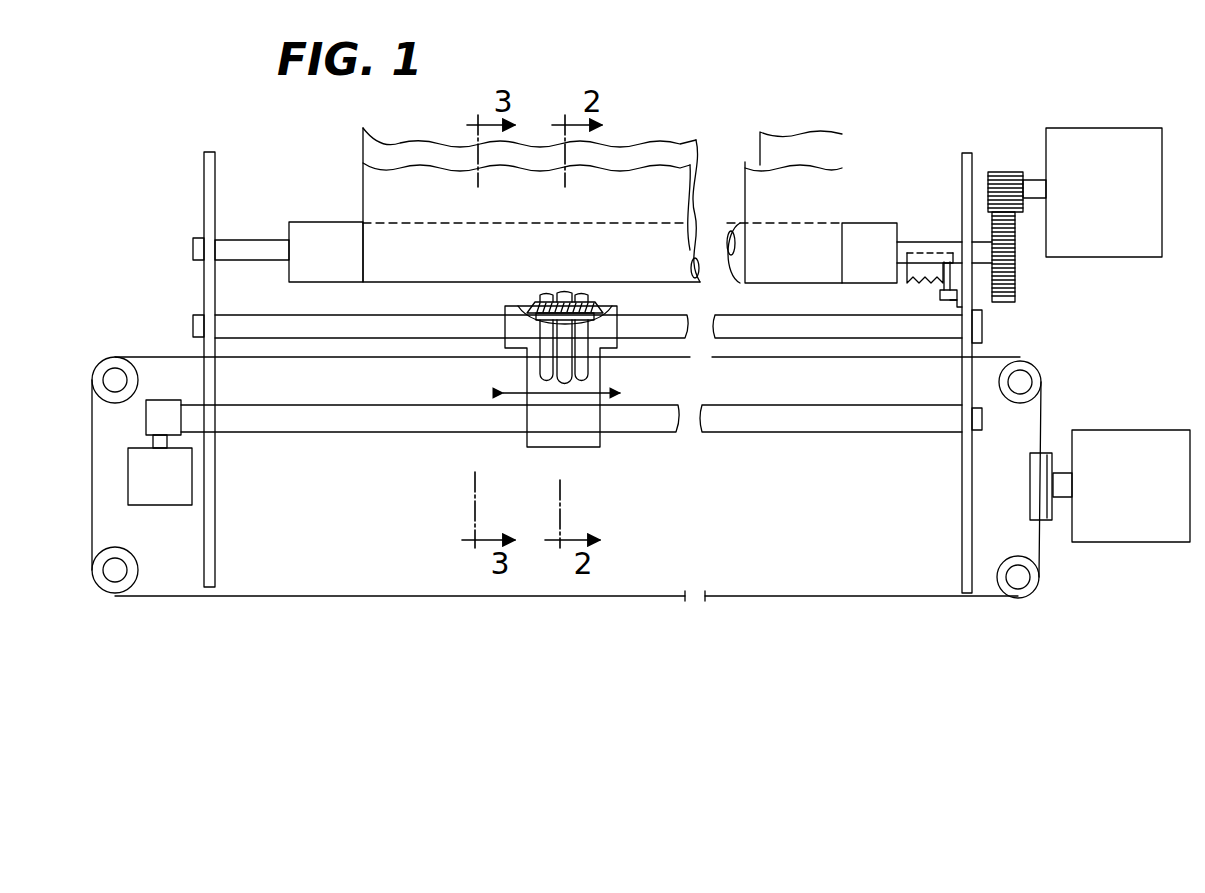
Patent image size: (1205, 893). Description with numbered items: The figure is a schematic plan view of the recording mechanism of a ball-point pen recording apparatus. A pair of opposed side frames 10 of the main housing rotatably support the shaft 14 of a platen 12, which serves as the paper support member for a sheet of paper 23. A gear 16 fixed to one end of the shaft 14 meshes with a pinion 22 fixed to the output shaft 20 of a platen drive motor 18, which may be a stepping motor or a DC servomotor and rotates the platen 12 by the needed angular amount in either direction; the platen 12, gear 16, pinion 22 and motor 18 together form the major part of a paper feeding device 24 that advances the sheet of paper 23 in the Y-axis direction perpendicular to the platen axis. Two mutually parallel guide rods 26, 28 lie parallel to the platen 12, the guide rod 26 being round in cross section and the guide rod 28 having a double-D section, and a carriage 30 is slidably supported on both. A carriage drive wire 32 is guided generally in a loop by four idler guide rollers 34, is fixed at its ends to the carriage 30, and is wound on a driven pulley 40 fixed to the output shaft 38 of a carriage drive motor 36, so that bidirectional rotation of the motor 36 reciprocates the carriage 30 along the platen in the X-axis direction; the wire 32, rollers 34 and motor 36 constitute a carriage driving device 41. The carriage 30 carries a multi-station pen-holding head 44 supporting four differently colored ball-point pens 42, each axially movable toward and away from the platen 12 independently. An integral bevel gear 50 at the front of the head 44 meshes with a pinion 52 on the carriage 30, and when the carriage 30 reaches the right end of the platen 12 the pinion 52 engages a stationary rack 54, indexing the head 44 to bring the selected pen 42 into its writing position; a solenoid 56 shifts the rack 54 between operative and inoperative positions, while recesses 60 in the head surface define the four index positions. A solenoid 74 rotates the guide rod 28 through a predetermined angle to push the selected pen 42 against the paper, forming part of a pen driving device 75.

The side frames 10 is at (204, 200).
The platen 12 is at (322, 228).
The shaft 14 is at (243, 246).
The gear 16 is at (1016, 287).
The platen drive motor 18 is at (1100, 140).
The output shaft 20 is at (1031, 186).
The pinion 22 is at (1000, 176).
The sheet of paper 23 is at (363, 180).
The paper feeding device 24 is at (862, 216).
The guide rod 26 is at (805, 326).
The guide rod 28 is at (352, 432).
The carriage 30 is at (515, 342).
The carriage drive wire 32 is at (835, 598).
The idler guide rollers 34 is at (108, 362).
The carriage drive motor 36 is at (1145, 445).
The output shaft 38 is at (1063, 475).
The driven pulley 40 is at (1048, 522).
The carriage driving device 41 is at (1110, 456).
The ball-point pens 42 is at (545, 372).
The multi-station pen-holding head 44 is at (598, 312).
The bevel gear 50 is at (548, 300).
The pinion 52 is at (570, 292).
The stationary rack 54 is at (924, 268).
The solenoid 56 is at (946, 300).
The recesses 60 is at (528, 312).
The solenoid 74 is at (135, 467).
The pen driving device 75 is at (124, 502).